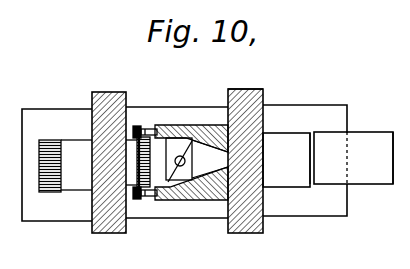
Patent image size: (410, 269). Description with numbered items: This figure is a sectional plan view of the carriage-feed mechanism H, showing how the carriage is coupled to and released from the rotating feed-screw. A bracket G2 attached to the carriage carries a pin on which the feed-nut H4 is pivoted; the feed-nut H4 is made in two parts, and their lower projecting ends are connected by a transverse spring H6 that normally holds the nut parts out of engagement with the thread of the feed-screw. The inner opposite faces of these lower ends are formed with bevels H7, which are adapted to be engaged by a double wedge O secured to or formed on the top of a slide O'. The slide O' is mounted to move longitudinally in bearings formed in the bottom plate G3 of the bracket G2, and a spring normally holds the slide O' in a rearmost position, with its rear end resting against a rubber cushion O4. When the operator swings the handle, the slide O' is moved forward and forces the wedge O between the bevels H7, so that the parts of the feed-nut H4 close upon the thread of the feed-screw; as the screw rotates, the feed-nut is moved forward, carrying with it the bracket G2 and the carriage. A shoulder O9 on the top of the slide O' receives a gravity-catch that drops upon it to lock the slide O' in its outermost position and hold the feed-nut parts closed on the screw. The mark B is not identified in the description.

The bracket G2 is at (106, 92).
The bottom plate G3 is at (45, 222).
The rubber cushion O4 is at (45, 140).
The feed mechanism H is at (260, 88).
The feed-nut H4 is at (198, 124).
The transverse spring H6 is at (135, 130).
The bevels H7 is at (223, 160).
The double wedge O is at (172, 189).
The slide O' is at (286, 160).
The shoulder O9 is at (316, 160).
The brake beam B is at (400, 160).